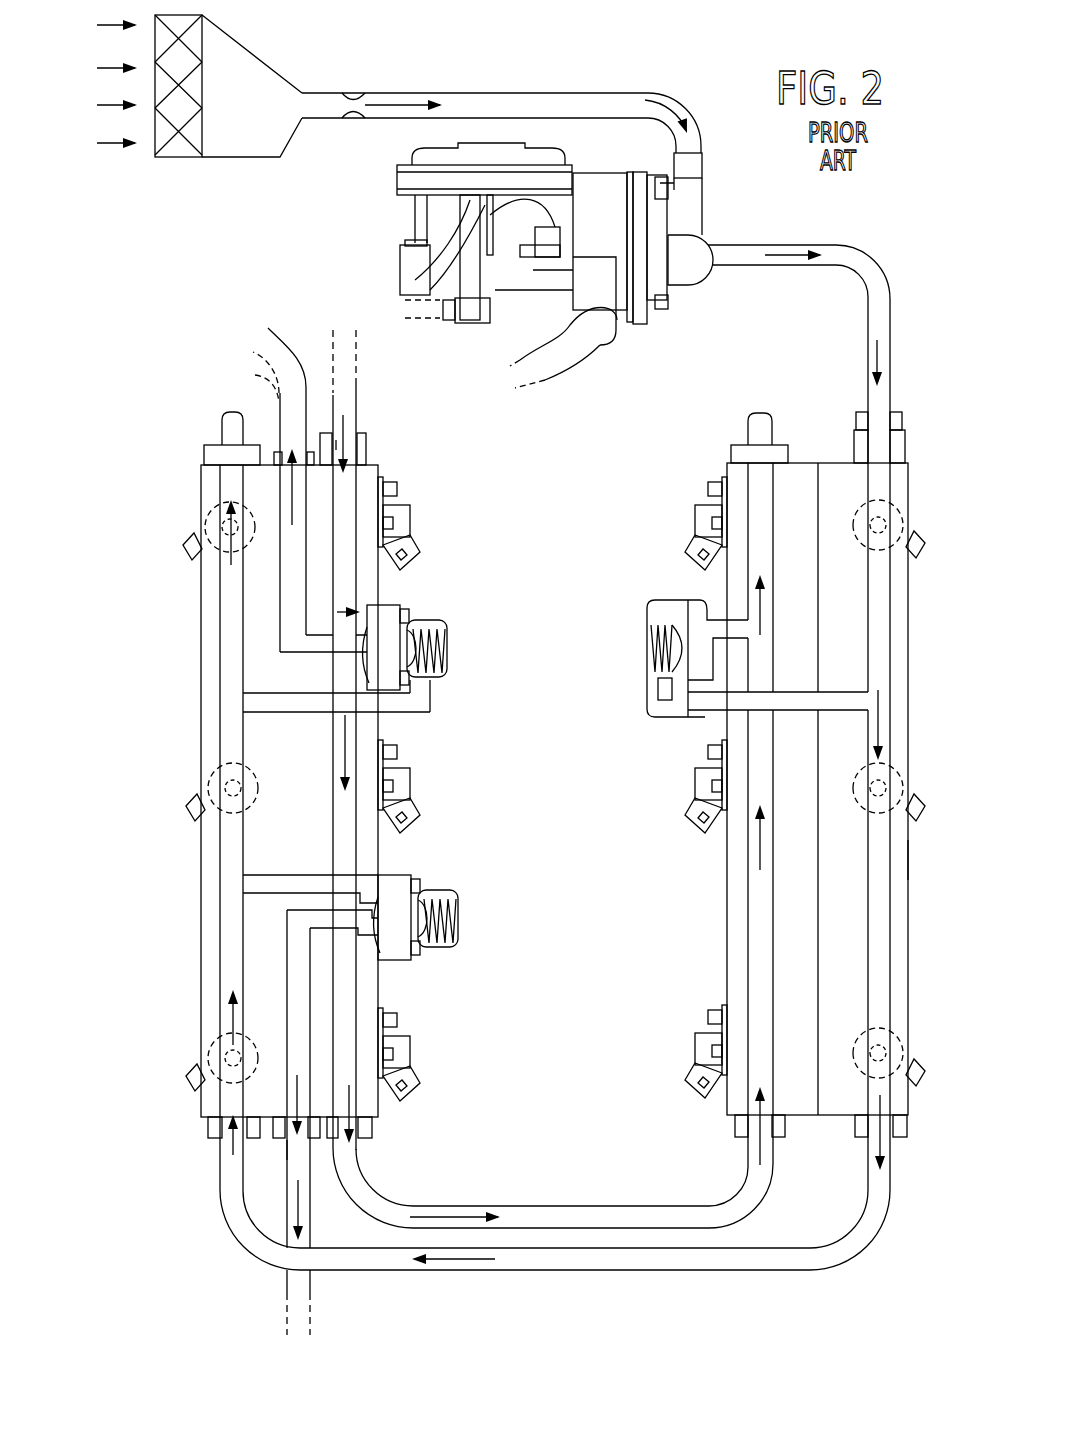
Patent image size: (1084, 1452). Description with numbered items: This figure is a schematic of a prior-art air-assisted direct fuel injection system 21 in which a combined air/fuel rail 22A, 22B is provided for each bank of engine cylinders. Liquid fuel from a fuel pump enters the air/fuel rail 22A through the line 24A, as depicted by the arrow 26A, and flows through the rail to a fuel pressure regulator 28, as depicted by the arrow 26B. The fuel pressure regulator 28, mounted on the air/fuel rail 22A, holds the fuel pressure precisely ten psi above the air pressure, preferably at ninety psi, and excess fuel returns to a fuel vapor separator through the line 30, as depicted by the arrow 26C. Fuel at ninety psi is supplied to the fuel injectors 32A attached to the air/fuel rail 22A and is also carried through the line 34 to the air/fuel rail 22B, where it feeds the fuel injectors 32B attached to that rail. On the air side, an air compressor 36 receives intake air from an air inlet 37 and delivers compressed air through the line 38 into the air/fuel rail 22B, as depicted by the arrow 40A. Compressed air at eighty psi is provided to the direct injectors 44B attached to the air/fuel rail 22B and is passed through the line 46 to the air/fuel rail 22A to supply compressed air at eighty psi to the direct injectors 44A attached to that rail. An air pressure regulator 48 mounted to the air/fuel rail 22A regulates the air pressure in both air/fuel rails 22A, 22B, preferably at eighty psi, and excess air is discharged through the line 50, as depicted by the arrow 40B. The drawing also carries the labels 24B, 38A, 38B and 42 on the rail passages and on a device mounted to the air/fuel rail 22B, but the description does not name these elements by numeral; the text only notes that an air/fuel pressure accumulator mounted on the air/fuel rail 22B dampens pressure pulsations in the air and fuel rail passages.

The air-assisted fuel injection system 21 is at (677, 85).
The air/fuel rail 22A is at (201, 614).
The air/fuel rail 22B is at (908, 630).
The line 24A is at (362, 386).
The fuel supply passage 24B is at (748, 905).
The arrow 26A is at (338, 447).
The arrow 26B is at (366, 612).
The arrow 26C is at (293, 493).
The fuel pressure regulator 28 is at (442, 618).
The line 30 is at (268, 328).
The fuel injectors 32A is at (412, 512).
The fuel injectors 32B is at (693, 512).
The line 34 is at (503, 1208).
The air compressor 36 is at (397, 190).
The air inlet 37 is at (260, 54).
The line 38 is at (866, 264).
The rail inlet 38A is at (908, 858).
The rail inlet 38B is at (201, 898).
The arrow 40A is at (888, 358).
The arrow 40B is at (300, 1205).
The pressure regulator 42 is at (648, 668).
The direct injectors 44A is at (215, 510).
The direct injectors 44B is at (897, 512).
The line 46 is at (438, 1271).
The air pressure regulator 48 is at (452, 916).
The line 50 is at (286, 1150).